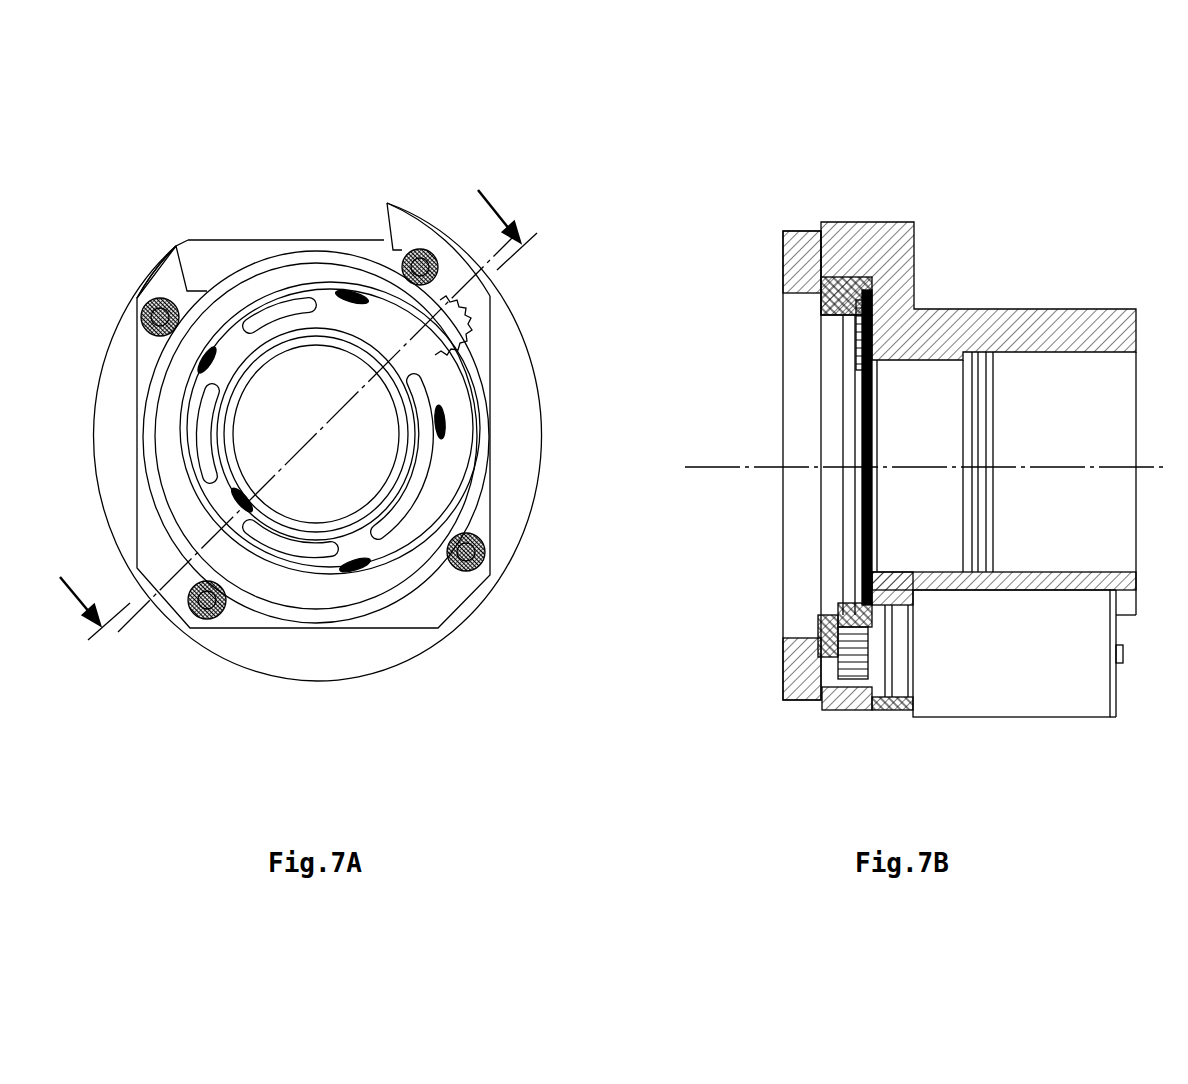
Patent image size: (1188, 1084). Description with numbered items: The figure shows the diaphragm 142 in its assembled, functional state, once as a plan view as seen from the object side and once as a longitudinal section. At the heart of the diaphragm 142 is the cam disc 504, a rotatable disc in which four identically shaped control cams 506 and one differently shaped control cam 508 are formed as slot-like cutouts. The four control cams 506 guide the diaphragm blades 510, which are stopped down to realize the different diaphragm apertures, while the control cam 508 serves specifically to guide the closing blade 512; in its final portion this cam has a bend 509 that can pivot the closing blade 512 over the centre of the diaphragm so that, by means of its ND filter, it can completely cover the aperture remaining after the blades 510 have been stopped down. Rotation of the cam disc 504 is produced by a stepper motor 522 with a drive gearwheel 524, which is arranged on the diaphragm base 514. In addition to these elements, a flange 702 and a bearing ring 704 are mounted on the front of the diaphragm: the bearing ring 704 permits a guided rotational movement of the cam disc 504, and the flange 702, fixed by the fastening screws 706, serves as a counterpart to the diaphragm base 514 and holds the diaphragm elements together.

In FIG. 7B, the diaphragm 142 is at (889, 402).
In FIG. 7A, the flange 702 is at (432, 604).
In FIG. 7B, the flange 702 is at (730, 430).
In FIG. 7A, the diaphragm base 514 is at (376, 442).
In FIG. 7B, the diaphragm base 514 is at (978, 440).
In FIG. 7A, the control cam 506 is at (202, 248).
In FIG. 7A, the bearing ring 704 is at (316, 387).
In FIG. 7B, the bearing ring 704 is at (736, 452).
In FIG. 7A, the cam disc 504 is at (330, 507).
In FIG. 7B, the cam disc 504 is at (746, 439).
In FIG. 7A, the control cam 508 is at (410, 364).
In FIG. 7A, the bend 509 is at (420, 393).
In FIG. 7A, the fastening screws 706 is at (287, 506).
In FIG. 7A, the drive gearwheel 524 is at (448, 303).
In FIG. 7B, the drive gearwheel 524 is at (892, 697).
In FIG. 7B, the diaphragm blades 510 is at (979, 301).
In FIG. 7B, the closing blade 512 is at (845, 630).
In FIG. 7B, the stepper motor 522 is at (1046, 678).